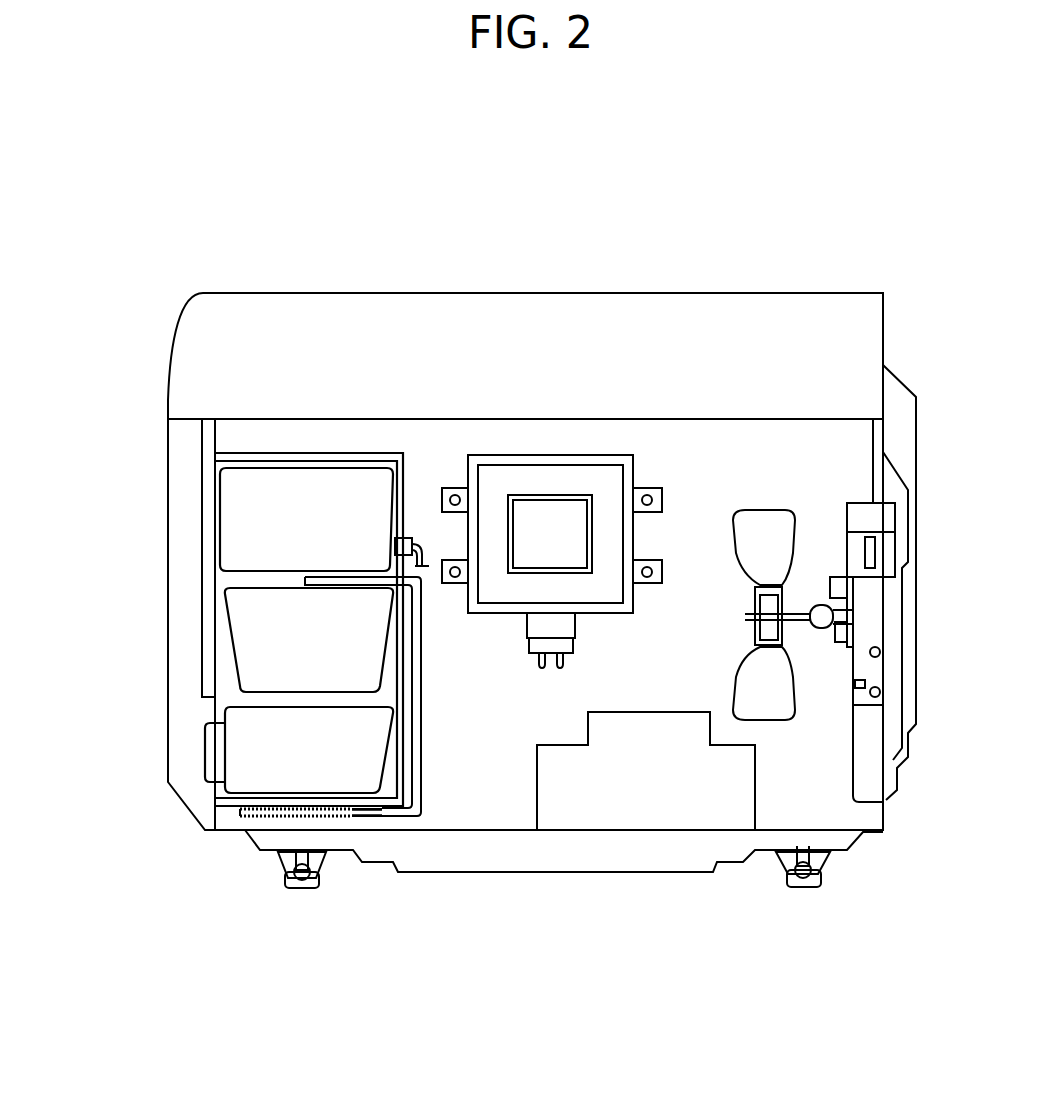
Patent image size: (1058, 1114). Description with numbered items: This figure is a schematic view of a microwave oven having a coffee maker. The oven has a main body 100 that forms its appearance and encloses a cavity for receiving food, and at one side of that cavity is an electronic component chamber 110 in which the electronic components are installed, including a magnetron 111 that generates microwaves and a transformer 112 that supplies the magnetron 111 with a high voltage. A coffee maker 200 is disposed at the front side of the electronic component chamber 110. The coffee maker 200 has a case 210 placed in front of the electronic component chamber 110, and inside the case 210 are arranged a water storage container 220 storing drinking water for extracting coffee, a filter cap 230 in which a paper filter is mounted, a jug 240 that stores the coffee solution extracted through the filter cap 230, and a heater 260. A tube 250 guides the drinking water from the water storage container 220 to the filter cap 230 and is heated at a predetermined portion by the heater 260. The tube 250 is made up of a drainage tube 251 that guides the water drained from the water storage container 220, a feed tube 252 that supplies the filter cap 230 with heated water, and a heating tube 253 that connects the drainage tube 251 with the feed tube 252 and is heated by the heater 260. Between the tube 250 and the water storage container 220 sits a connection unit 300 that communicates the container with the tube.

The main body 100 is at (818, 294).
The electronic component chamber 110 is at (722, 482).
The magnetron 111 is at (557, 525).
The transformer 112 is at (645, 800).
The coffee maker 200 is at (245, 449).
The case 210 is at (325, 453).
The water storage container 220 is at (250, 510).
The filter cap 230 is at (247, 632).
The jug 240 is at (247, 740).
The tube 250 is at (430, 620).
The drainage tube 251 is at (430, 568).
The feed tube 252 is at (418, 760).
The heating tube 253 is at (367, 880).
The heater 260 is at (240, 818).
The connection unit 300 is at (405, 538).